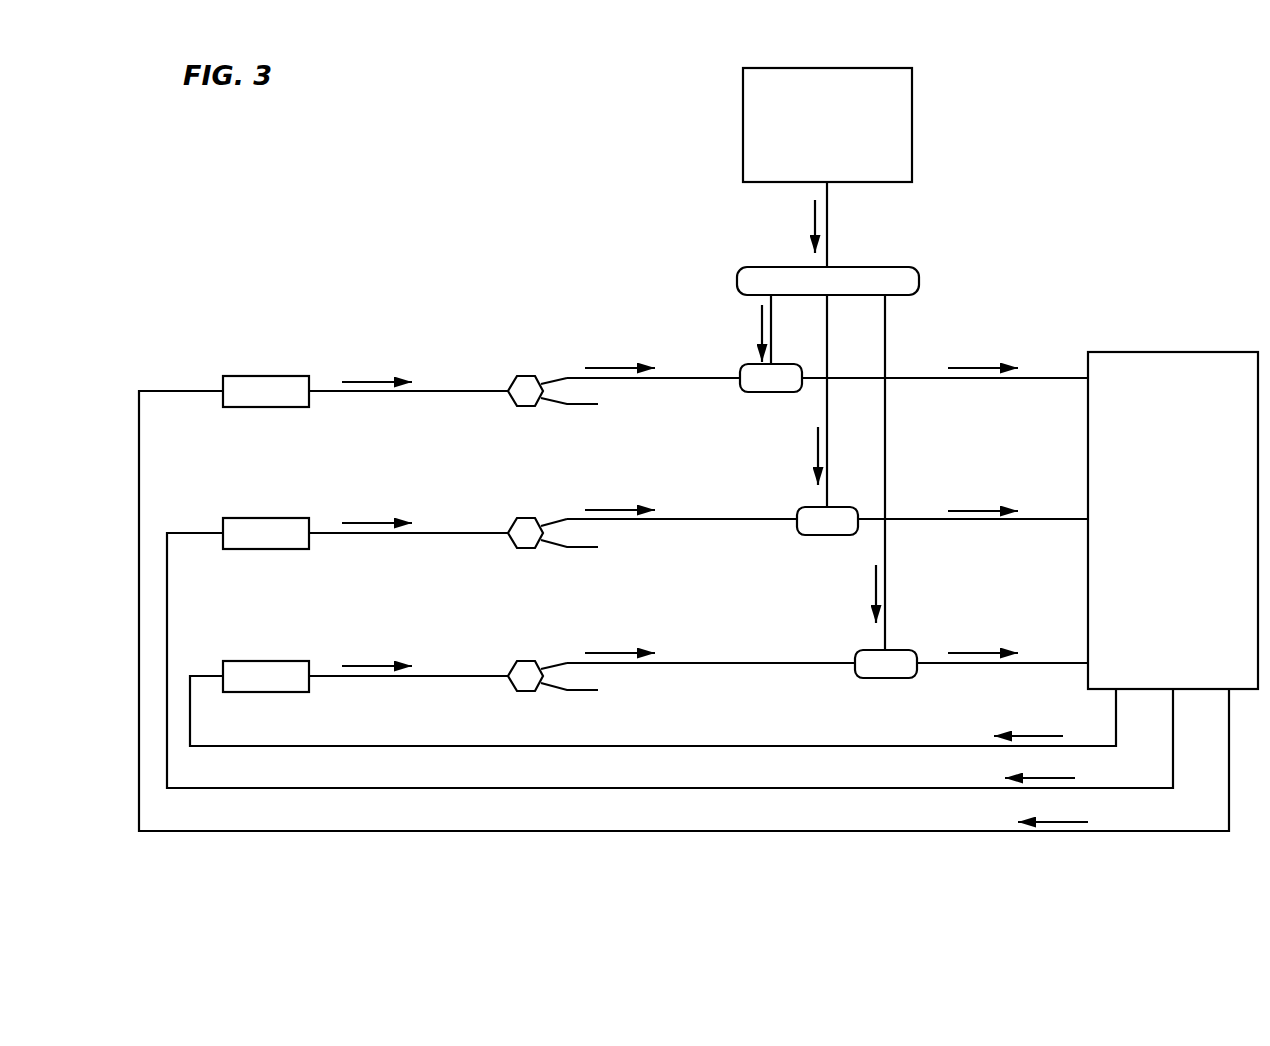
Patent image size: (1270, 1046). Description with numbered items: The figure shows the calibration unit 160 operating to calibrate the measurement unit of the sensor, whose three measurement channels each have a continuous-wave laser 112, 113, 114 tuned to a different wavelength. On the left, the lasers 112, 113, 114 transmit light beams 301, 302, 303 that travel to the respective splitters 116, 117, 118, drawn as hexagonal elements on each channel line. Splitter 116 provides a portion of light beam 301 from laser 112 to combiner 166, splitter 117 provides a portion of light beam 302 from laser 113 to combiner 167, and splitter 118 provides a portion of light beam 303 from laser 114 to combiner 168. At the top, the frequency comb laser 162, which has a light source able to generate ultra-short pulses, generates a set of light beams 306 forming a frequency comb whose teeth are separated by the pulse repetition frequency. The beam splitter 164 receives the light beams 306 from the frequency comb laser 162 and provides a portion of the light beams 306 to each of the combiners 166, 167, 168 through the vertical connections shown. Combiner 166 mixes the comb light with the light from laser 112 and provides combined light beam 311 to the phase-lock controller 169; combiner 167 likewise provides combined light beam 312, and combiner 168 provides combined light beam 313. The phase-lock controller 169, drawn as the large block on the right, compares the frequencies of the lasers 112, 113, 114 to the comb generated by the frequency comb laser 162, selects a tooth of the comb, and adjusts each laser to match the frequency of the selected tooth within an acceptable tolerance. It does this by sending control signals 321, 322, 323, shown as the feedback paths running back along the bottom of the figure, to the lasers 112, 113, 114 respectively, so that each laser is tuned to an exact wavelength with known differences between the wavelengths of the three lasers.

The CW laser 112 is at (268, 407).
The CW laser 113 is at (253, 549).
The CW laser 114 is at (291, 692).
The splitter 116 is at (521, 376).
The splitter 117 is at (521, 518).
The splitter 118 is at (521, 661).
The calibration unit 160 is at (1174, 138).
The frequency comb laser 162 is at (813, 162).
The beam splitter 164 is at (757, 267).
The combiner 166 is at (746, 364).
The combiner 167 is at (802, 507).
The combiner 168 is at (863, 650).
The phase-lock controller 169 is at (1159, 565).
The light beam 301 is at (370, 380).
The light beam 302 is at (374, 521).
The light beam 303 is at (374, 664).
The set of light beams 306 is at (813, 213).
The combined light beam 311 is at (982, 366).
The combined light beam 312 is at (982, 509).
The combined light beam 313 is at (982, 651).
The control signal 321 is at (1073, 821).
The control signal 322 is at (1061, 777).
The control signal 323 is at (1038, 735).